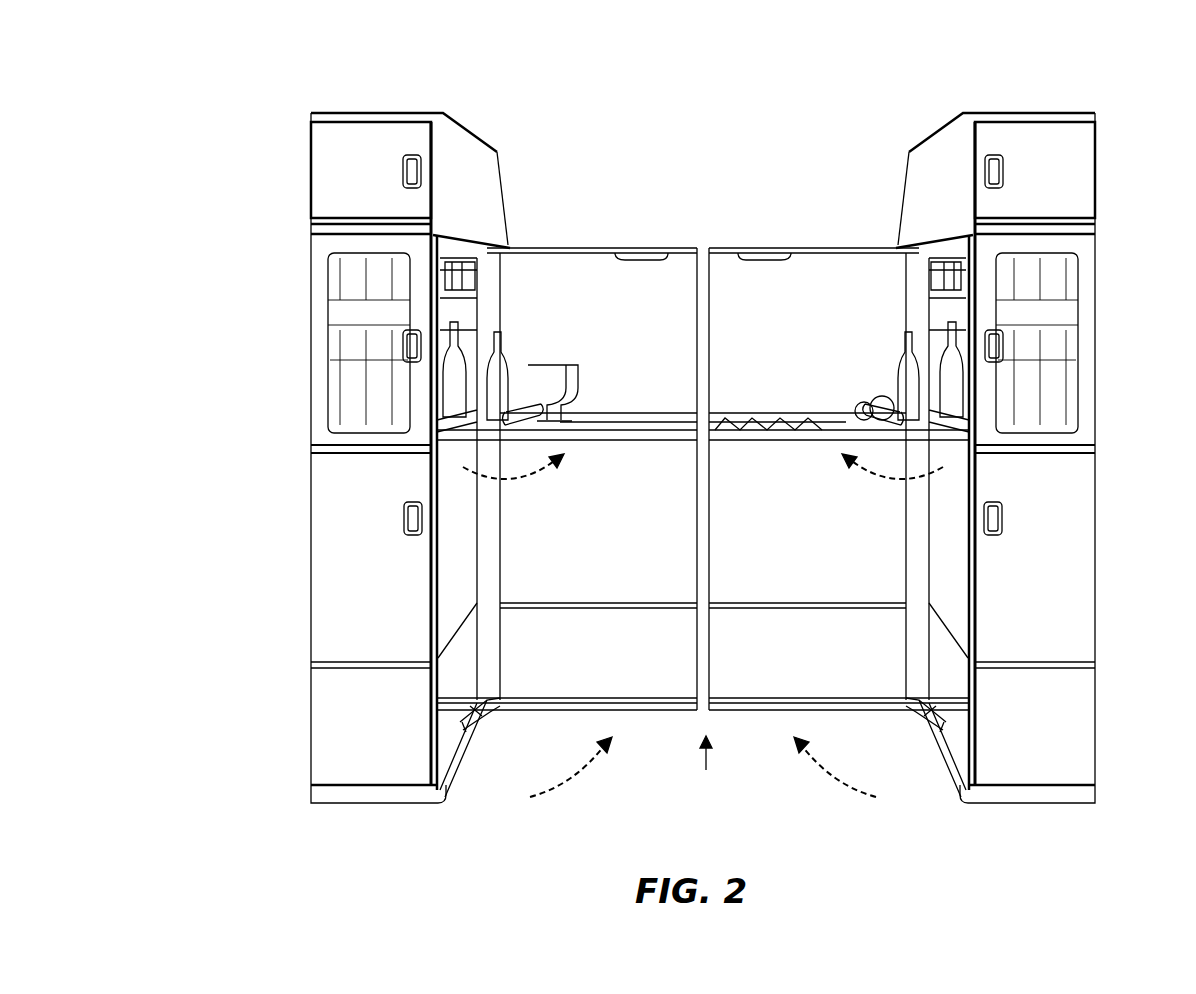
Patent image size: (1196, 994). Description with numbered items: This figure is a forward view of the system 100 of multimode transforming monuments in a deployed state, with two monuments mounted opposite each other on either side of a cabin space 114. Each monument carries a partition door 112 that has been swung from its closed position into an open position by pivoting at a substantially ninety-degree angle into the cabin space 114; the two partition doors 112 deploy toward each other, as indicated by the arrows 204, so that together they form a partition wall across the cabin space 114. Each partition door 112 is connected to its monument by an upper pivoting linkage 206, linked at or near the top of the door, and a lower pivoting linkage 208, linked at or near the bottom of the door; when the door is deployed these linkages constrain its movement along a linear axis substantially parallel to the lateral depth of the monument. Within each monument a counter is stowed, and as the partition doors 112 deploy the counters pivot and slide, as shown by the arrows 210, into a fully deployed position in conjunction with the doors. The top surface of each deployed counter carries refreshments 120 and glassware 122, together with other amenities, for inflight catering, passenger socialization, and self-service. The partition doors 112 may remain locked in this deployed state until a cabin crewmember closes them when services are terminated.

The system of multimode transforming monuments 100 is at (703, 458).
The partition door 112 is at (678, 300).
The cabin space 114 is at (710, 768).
The refreshments 120 is at (497, 387).
The glassware 122 is at (555, 388).
The deployment of partition doors 204 is at (598, 786).
The upper pivoting linkage 206 is at (508, 245).
The lower pivoting linkage 208 is at (488, 718).
The deployment of counters 210 is at (505, 483).